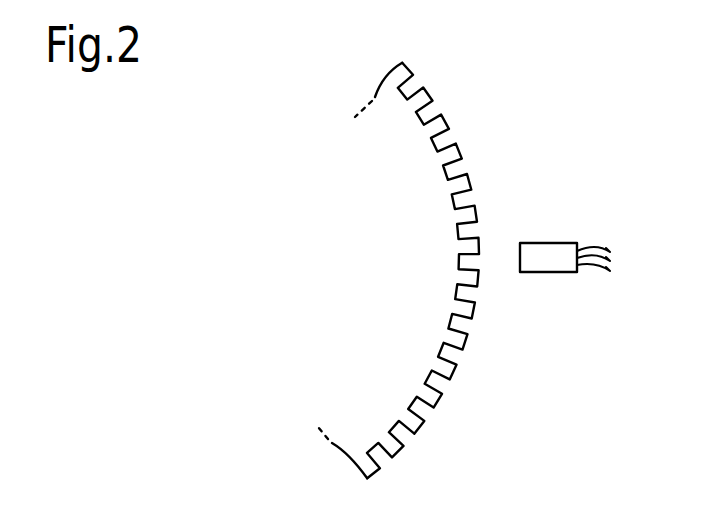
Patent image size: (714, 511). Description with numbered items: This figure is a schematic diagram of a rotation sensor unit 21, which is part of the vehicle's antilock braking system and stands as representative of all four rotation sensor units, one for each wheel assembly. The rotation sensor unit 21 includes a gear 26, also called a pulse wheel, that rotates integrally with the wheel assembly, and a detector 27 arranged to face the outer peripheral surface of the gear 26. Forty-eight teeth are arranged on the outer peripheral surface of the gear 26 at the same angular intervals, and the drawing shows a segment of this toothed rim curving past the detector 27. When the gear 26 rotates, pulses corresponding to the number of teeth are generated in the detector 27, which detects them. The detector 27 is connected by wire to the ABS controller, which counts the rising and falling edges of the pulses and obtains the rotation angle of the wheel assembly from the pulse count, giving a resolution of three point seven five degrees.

The first rotation sensor unit 21 is at (538, 80).
The gear (pulse wheel) 26 is at (412, 128).
The detector 27 is at (548, 243).